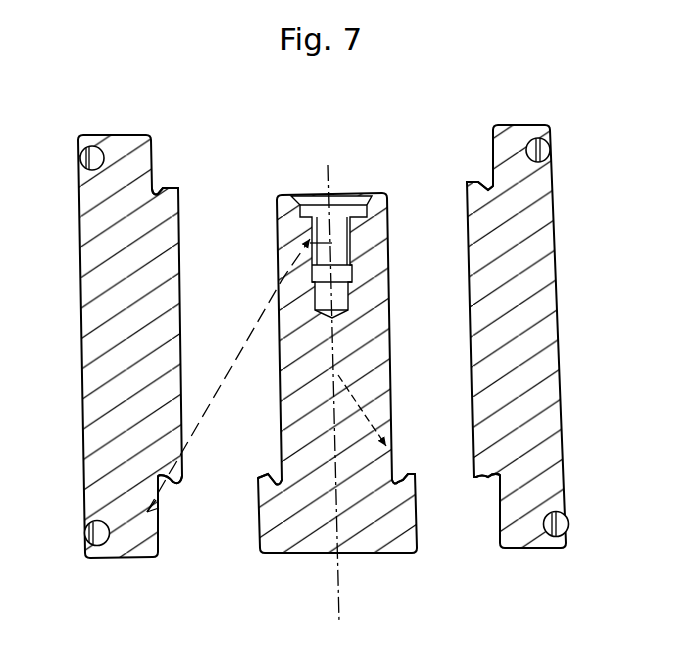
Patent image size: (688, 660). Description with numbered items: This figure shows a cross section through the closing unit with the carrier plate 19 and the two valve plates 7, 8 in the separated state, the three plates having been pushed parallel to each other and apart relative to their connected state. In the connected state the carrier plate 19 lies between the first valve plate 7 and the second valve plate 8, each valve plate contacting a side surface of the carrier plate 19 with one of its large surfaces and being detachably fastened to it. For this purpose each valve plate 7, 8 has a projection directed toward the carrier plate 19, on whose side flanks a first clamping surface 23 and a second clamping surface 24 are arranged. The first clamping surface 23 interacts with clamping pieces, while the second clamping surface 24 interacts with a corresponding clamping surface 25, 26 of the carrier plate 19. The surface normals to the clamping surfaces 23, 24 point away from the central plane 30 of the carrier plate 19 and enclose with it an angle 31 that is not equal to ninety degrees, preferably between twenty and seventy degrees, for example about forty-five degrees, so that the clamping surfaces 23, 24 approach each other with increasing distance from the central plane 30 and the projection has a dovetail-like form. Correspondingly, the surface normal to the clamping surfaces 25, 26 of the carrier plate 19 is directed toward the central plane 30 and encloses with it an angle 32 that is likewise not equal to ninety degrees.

The first valve plate 7 is at (115, 292).
The second valve plate 8 is at (537, 219).
The carrier plate 19 is at (375, 225).
The first clamping surface 23 is at (158, 190).
The second clamping surface 24 is at (168, 484).
The clamping surface of the carrier plate 25 is at (273, 472).
The clamping surface of the carrier plate 26 is at (401, 472).
The central plane 30 is at (340, 592).
The angle 31 is at (330, 210).
The angle 32 is at (338, 396).